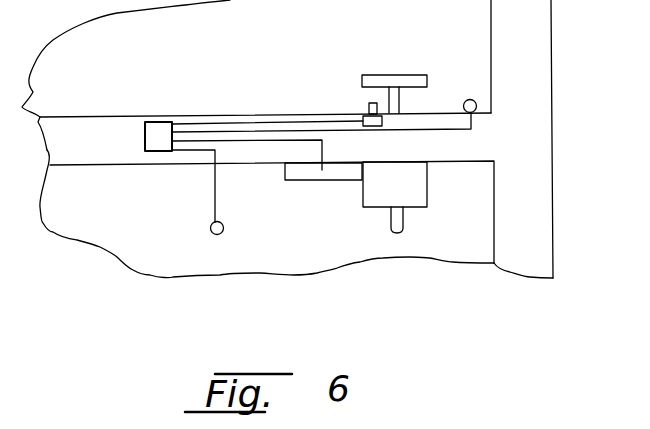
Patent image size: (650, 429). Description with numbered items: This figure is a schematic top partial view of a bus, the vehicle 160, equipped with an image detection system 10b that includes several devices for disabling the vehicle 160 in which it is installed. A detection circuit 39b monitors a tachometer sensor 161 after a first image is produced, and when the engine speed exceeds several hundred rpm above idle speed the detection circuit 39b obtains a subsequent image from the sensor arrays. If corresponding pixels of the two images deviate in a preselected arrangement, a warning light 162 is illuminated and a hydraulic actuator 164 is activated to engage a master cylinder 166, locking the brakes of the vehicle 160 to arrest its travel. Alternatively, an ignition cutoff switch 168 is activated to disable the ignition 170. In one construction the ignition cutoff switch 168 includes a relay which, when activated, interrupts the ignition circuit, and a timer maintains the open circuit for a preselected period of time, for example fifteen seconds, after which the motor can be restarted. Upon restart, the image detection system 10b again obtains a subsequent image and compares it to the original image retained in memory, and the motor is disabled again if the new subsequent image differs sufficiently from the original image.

The image detection system 10b is at (134, 104).
The vehicle 160 is at (548, 197).
The detection circuit 39b is at (143, 153).
The tachometer sensor 161 is at (211, 229).
The warning light 162 is at (475, 100).
The hydraulic actuator 164 is at (318, 181).
The master cylinder 166 is at (427, 183).
The ignition cutoff switch 168 is at (363, 118).
The ignition 170 is at (368, 103).